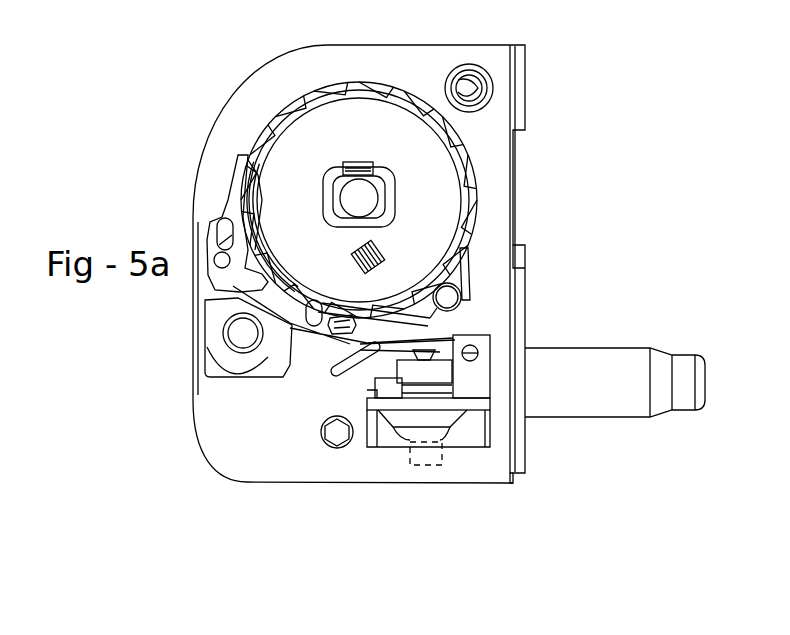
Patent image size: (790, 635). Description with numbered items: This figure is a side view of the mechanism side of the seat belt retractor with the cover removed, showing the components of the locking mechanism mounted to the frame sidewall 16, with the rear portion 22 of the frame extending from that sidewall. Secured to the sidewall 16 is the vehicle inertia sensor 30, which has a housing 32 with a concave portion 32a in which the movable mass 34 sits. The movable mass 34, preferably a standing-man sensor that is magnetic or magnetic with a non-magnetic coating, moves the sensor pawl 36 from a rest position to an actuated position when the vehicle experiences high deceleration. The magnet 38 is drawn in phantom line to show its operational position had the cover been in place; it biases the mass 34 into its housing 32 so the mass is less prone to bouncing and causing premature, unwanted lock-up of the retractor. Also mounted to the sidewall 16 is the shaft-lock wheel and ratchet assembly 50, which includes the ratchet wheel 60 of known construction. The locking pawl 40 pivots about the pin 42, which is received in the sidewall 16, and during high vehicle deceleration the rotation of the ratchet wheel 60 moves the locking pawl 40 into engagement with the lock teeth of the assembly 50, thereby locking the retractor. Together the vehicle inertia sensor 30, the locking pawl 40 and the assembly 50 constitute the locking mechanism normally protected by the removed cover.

The sidewall 16 is at (232, 432).
The rear portion 22 is at (517, 83).
The vehicle inertia sensor 30 is at (462, 423).
The housing 32 is at (365, 432).
The concave portion 32a is at (397, 418).
The movable mass 34 is at (415, 378).
The sensor pawl 36 is at (437, 345).
The magnet 38 is at (433, 450).
The locking pawl 40 is at (267, 358).
The pin 42 is at (243, 333).
The shaft-lock wheel and ratchet assembly 50 is at (380, 75).
The ratchet wheel 60 is at (318, 102).